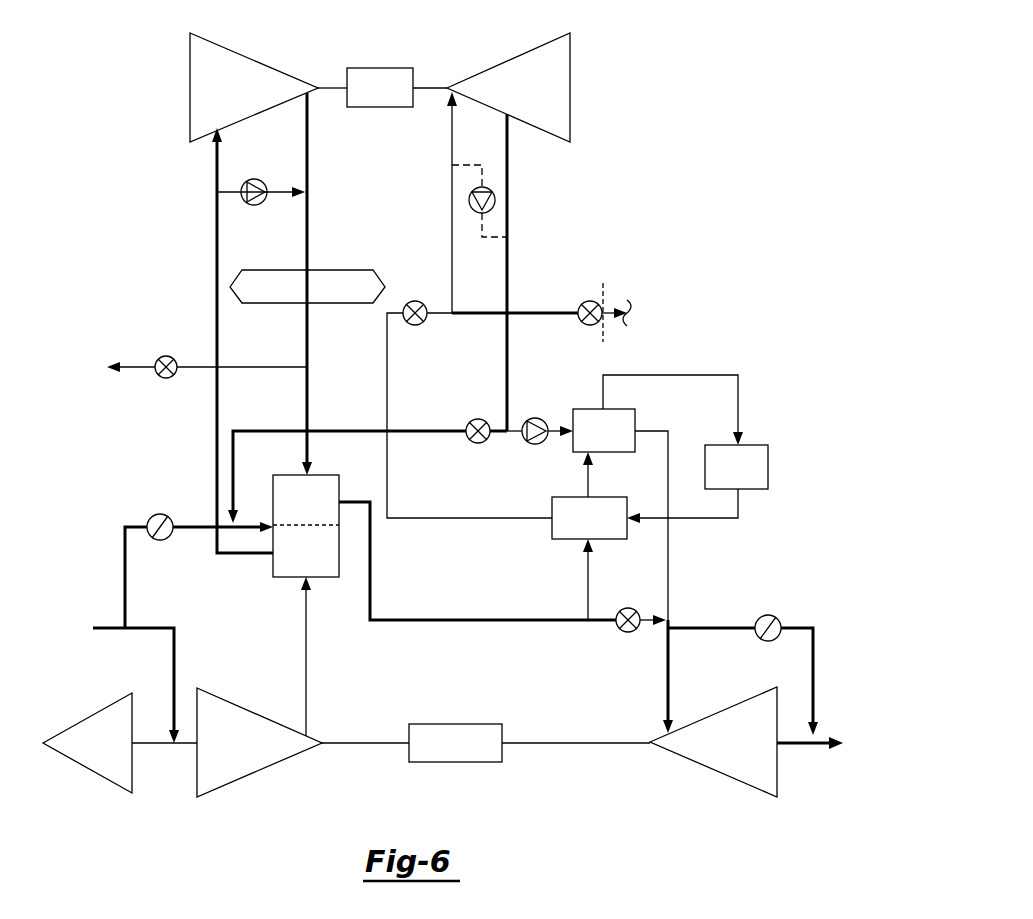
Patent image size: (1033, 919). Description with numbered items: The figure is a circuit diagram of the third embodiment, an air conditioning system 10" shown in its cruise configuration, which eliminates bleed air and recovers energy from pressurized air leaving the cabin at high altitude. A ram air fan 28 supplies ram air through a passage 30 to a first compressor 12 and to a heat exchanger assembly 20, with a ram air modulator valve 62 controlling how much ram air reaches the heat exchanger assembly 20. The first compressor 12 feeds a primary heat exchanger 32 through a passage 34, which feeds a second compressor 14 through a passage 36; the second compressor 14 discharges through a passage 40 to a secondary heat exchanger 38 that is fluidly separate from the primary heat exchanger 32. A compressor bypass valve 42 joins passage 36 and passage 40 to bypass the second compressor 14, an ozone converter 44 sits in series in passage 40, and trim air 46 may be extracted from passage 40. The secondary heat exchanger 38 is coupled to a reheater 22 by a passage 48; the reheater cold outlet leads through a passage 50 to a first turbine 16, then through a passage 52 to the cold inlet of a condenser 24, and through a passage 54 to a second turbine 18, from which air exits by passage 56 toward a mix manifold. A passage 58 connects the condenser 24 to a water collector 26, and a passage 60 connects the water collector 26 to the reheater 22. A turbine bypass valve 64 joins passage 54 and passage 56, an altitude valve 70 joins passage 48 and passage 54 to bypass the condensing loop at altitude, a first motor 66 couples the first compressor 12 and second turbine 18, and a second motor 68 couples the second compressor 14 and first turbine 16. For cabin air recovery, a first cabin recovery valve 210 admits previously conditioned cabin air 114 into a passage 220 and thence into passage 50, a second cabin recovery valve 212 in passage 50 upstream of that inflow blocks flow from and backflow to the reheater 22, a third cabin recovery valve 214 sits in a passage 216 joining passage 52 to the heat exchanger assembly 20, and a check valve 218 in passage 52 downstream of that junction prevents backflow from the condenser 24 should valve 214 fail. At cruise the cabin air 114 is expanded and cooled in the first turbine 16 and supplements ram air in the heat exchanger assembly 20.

The air conditioning system 10 is at (667, 142).
The first compressor 12 is at (245, 780).
The second compressor 14 is at (246, 55).
The first turbine 16 is at (510, 60).
The second turbine 18 is at (712, 775).
The heat exchanger assembly 20 is at (292, 475).
The reheater 22 is at (560, 539).
The condenser 24 is at (583, 452).
The water collector 26 is at (768, 460).
The ram air fan 28 is at (110, 782).
The passage 30 is at (148, 745).
The primary heat exchanger 32 is at (280, 577).
The passage 34 is at (307, 660).
The passage 36 is at (215, 283).
The secondary heat exchanger 38 is at (340, 485).
The passage 40 is at (309, 333).
The compressor bypass valve 42 is at (257, 179).
The ozone converter 44 is at (323, 270).
The trim air 46 is at (135, 369).
The passage 48 is at (460, 622).
The passage 50 is at (387, 393).
The passage 52 is at (508, 270).
The passage 54 is at (670, 622).
The passage 56 is at (795, 745).
The passage 58 is at (708, 375).
The passage 60 is at (740, 504).
The ram air modulator valve 62 is at (150, 515).
The turbine bypass valve 64 is at (778, 618).
The first motor 66 is at (438, 762).
The second motor 68 is at (372, 68).
The altitude valve 70 is at (631, 634).
The conditioned air 114 is at (660, 292).
The first cabin recovery valve 210 is at (590, 300).
The second cabin recovery valve 212 is at (411, 300).
The third cabin recovery valve 214 is at (481, 443).
The passage 216 is at (362, 430).
The check valve 218 is at (540, 418).
The passage 220 is at (509, 320).